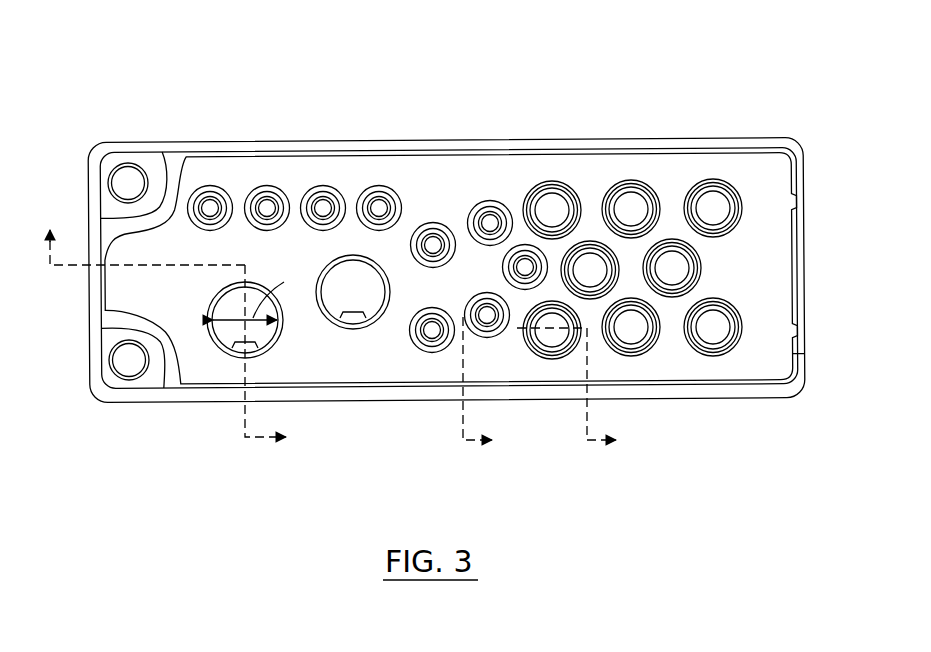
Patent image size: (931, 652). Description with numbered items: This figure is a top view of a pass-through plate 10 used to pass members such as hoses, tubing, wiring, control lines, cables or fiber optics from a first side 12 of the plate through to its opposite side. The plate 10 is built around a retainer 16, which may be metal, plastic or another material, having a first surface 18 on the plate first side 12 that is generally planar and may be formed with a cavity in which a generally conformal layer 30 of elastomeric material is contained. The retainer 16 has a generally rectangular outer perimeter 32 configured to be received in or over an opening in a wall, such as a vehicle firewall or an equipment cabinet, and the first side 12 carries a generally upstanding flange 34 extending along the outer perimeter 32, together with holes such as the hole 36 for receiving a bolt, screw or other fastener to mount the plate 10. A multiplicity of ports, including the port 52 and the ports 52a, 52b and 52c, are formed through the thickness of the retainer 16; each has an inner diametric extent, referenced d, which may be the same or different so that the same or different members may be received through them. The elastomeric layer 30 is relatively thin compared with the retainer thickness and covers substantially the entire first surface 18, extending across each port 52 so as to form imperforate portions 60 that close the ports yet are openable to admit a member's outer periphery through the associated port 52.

The pass-through plate 10 is at (749, 58).
The first side 12 is at (455, 186).
The retainer 16 is at (133, 141).
The first surface 18 is at (176, 163).
The conformal layer 30 is at (357, 166).
The outer perimeter 32 is at (599, 139).
The upstanding flange 34 is at (267, 149).
The hole 36 is at (131, 362).
The port 52 is at (738, 190).
The port 52a is at (481, 340).
The port 52b is at (546, 357).
The port 52c is at (272, 346).
The imperforate portion 60 is at (557, 337).